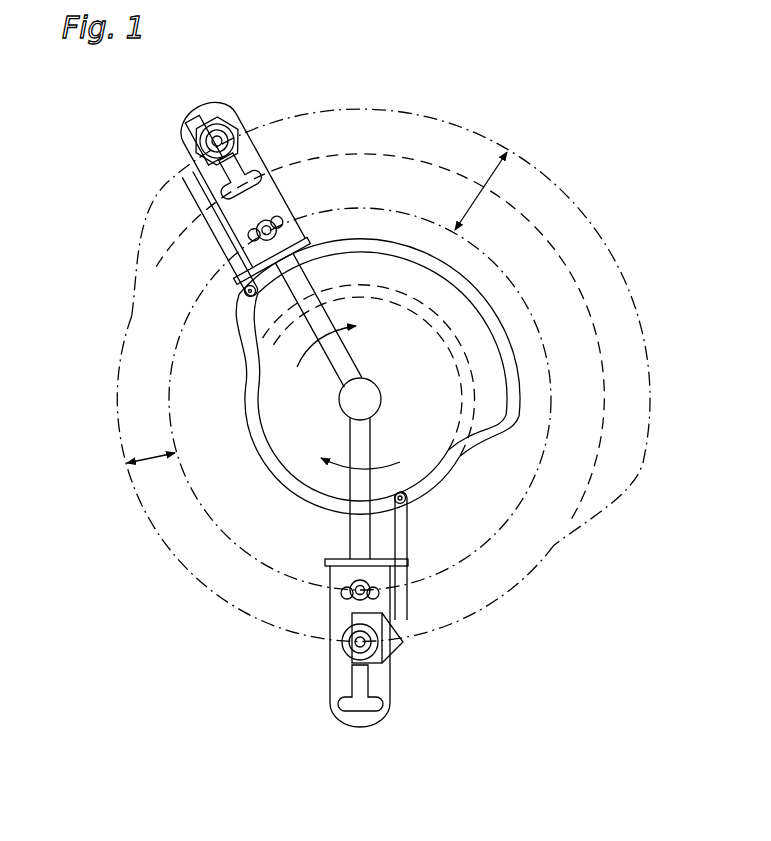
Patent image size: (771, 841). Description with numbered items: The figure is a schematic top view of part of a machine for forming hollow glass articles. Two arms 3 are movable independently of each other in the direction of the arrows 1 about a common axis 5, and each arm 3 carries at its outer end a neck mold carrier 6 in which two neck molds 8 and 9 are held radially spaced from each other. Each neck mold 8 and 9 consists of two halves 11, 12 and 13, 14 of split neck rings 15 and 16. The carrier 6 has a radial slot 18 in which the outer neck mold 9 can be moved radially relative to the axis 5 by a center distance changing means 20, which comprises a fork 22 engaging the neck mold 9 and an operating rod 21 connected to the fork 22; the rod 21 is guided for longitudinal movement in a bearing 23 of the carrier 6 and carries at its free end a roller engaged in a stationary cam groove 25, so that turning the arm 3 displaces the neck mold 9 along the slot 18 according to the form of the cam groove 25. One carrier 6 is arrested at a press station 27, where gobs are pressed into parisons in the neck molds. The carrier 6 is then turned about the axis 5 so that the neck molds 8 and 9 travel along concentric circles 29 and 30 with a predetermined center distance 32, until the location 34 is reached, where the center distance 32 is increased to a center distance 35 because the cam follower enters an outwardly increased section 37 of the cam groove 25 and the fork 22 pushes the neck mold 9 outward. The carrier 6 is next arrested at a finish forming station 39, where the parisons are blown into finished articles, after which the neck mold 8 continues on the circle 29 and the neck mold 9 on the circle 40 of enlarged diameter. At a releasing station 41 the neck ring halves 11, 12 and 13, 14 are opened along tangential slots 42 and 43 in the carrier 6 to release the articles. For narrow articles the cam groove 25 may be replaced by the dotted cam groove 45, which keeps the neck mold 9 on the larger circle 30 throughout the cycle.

The arrows 1 is at (312, 382).
The arms 3 is at (341, 352).
The common axis 5 is at (363, 396).
The neck mold carrier 6 is at (216, 104).
The neck mold 8 is at (350, 574).
The neck mold 9 is at (341, 651).
The neck ring half 11 is at (353, 602).
The neck ring half 12 is at (367, 599).
The neck ring half 13 is at (336, 640).
The neck ring half 14 is at (388, 661).
The split neck ring 15 is at (339, 582).
The split neck ring 16 is at (347, 662).
The radial slot 18 is at (371, 688).
The center distance changing means 20 is at (411, 525).
The operating rod 21 is at (404, 553).
The fork 22 is at (386, 628).
The bearing 23 is at (408, 573).
The cam groove 25 is at (253, 440).
The press station 27 is at (360, 750).
The circle 29 is at (210, 515).
The circle 30 is at (170, 553).
The center distance 32 is at (152, 463).
The location 34 is at (117, 316).
The center distance 35 is at (485, 190).
The outwardly increased section 37 is at (375, 254).
The finish forming station 39 is at (360, 78).
The circle 40 is at (432, 113).
The releasing station 41 is at (627, 502).
The tangential slot 42 is at (296, 203).
The tangential slot 43 is at (391, 707).
The cam groove 45 is at (441, 320).